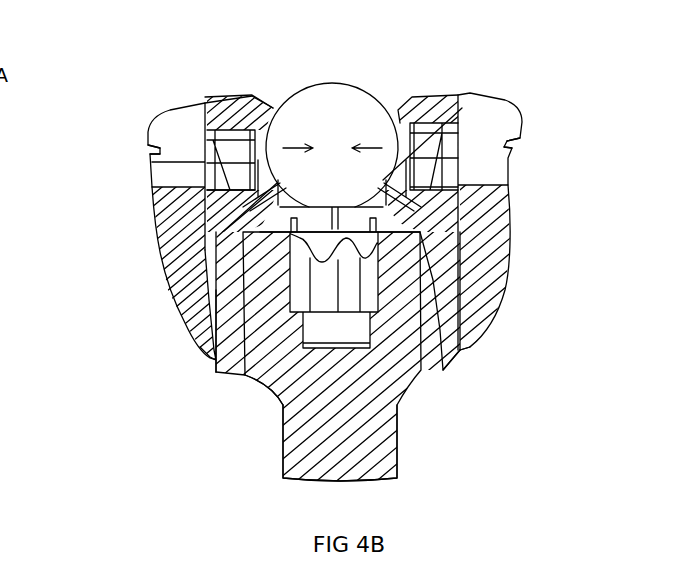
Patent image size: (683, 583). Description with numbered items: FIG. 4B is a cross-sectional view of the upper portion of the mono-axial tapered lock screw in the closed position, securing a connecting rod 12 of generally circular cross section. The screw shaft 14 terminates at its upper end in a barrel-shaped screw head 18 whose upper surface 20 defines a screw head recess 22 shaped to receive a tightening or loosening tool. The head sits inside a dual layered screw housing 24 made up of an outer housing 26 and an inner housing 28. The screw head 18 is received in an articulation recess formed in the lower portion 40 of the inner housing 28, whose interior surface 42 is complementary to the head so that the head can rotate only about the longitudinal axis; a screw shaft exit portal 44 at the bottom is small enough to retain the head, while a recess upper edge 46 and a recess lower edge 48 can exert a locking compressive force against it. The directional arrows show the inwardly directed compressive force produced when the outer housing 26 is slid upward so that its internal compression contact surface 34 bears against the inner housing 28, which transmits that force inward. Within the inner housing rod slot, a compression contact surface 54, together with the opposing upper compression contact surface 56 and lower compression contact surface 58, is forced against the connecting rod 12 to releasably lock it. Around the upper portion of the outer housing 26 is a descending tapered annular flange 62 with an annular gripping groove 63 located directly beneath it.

The connecting rod 12 is at (332, 107).
The screw shaft 14 is at (373, 468).
The screw head 18 is at (402, 364).
The upper surface 20 is at (462, 108).
The screw head recess 22 is at (405, 135).
The dual layered screw housing 24 is at (125, 246).
The outer housing 26 is at (152, 206).
The inner housing 28 is at (236, 283).
The outer housing internal compression contact surface 34 is at (460, 260).
The lower portion of the inner housing 40 is at (205, 347).
The interior surface of the articulation recess 42 is at (235, 290).
The screw shaft exit portal 44 is at (245, 375).
The recess upper edge 46 is at (485, 190).
The recess lower edge 48 is at (462, 348).
The compression contact surface 54 is at (240, 105).
The upper compression contact surface 56 is at (268, 128).
The lower compression contact surface 58 is at (237, 210).
The annular flange 62 is at (143, 145).
The annular gripping groove 63 is at (157, 152).